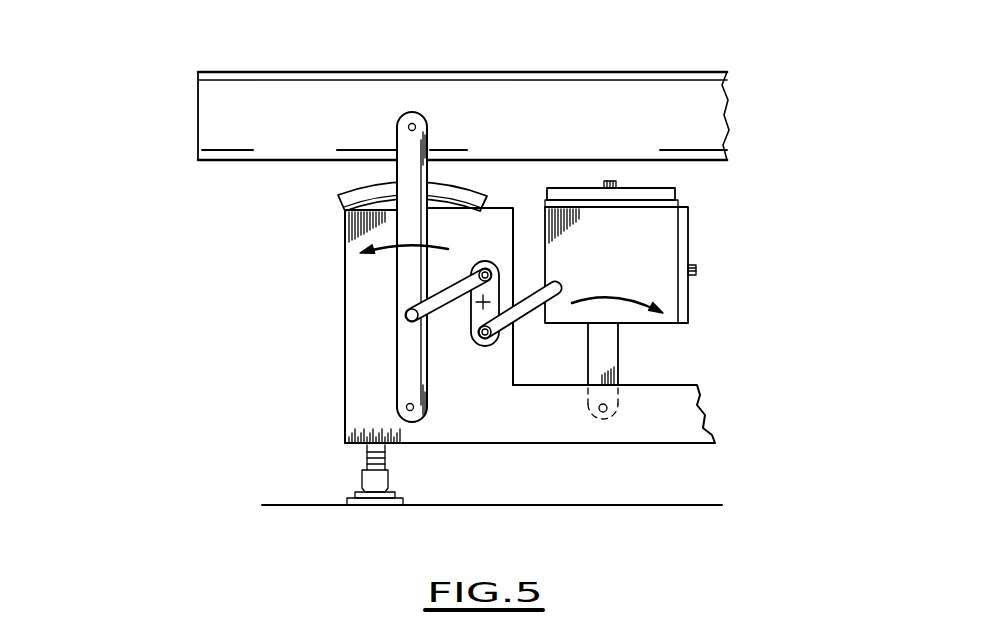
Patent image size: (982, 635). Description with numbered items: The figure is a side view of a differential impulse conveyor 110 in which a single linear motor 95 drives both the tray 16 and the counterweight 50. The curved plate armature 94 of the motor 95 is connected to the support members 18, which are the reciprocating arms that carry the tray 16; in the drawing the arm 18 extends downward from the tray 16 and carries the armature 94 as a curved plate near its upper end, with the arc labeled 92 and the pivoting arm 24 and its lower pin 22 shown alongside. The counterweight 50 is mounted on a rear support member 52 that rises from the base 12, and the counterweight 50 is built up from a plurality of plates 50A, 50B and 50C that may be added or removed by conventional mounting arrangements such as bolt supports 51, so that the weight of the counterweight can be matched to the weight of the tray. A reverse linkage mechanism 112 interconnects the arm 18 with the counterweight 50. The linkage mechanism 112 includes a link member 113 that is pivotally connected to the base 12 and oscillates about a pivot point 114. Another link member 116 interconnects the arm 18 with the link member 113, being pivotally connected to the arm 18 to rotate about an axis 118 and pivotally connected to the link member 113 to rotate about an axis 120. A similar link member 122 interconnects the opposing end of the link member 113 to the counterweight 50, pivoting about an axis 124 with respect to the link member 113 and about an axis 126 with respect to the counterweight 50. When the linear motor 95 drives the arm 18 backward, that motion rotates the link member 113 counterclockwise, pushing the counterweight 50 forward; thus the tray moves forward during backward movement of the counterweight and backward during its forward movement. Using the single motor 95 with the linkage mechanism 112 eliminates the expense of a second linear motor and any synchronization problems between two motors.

The base 12 is at (690, 430).
The tray 16 is at (695, 133).
The support member 18 is at (405, 268).
The adjustable foot 22 is at (407, 402).
The pivot arm 24 is at (412, 123).
The counterweight 50 is at (630, 255).
The plate 50A is at (677, 192).
The plate 50B is at (680, 203).
The plate 50C is at (682, 245).
The bolt support 51 is at (616, 183).
The rear support member 52 is at (603, 352).
The arcuate guide 92 is at (342, 210).
The curved plate armature 94 is at (357, 193).
The linear motor 95 is at (320, 252).
The differential impulse conveyor 110 is at (336, 125).
The linkage mechanism 112 is at (493, 236).
The link member 113 is at (498, 283).
The pivot point 114 is at (478, 338).
The link member 116 is at (425, 320).
The axis 118 is at (405, 316).
The axis 120 is at (480, 266).
The link member 122 is at (520, 310).
The axis 124 is at (488, 346).
The axis 126 is at (561, 288).